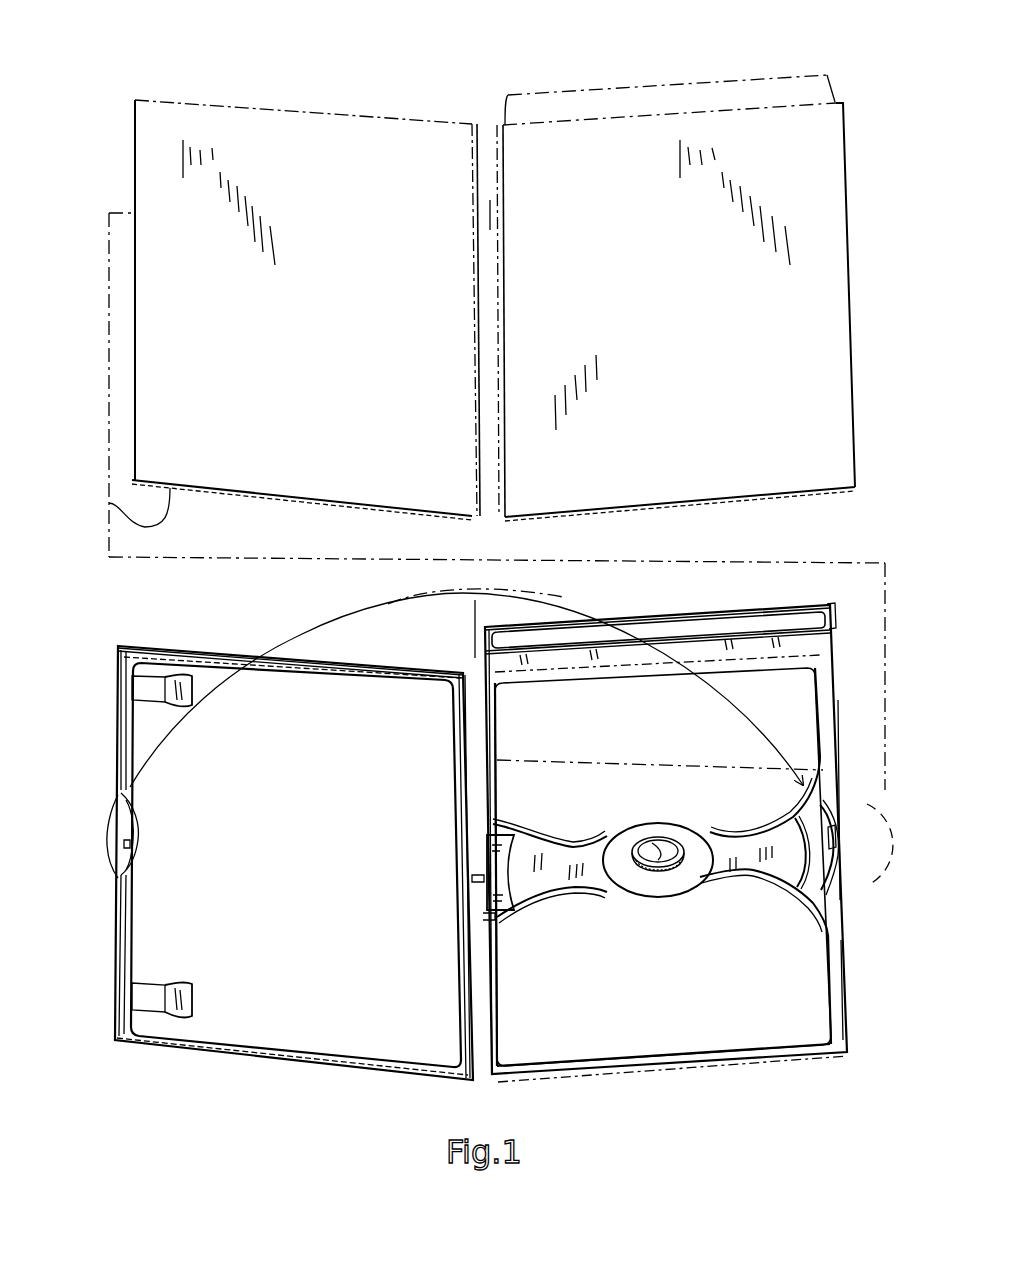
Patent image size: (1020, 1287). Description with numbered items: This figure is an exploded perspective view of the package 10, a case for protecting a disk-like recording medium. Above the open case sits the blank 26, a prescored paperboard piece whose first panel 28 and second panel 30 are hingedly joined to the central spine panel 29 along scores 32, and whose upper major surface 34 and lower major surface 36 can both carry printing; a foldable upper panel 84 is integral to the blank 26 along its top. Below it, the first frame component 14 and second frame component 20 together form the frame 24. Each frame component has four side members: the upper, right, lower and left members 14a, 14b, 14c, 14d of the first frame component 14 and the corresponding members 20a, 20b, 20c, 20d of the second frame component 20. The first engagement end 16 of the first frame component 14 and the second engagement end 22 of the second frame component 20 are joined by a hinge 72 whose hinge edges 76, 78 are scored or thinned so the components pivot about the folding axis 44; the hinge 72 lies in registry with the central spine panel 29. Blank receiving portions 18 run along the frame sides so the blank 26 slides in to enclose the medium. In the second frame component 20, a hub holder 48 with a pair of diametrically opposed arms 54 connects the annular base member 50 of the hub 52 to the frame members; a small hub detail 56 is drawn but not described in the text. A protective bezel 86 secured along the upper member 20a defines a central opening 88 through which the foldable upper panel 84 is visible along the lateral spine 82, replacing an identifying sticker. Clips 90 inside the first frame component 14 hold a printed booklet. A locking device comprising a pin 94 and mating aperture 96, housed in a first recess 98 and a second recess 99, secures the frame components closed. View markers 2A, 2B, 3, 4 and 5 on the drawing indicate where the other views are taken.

The package 10 is at (134, 92).
The first frame component 14 is at (180, 650).
The upper side member of first frame component 14a is at (252, 670).
The right side member of first frame component 14b is at (450, 1090).
The lower side member of first frame component 14c is at (222, 1055).
The left side member of first frame component 14d is at (138, 765).
The first engagement end 16 is at (452, 716).
The blank receiving portion 18 is at (637, 665).
The second frame component 20 is at (850, 663).
The upper side member of second frame component 20a is at (700, 680).
The right side member of second frame component 20b is at (828, 718).
The lower side member of second frame component 20c is at (765, 1050).
The left side member of second frame component 20d is at (500, 1013).
The second engagement end 22 is at (495, 742).
The frame 24 is at (390, 659).
The blank 26 is at (376, 128).
The first panel 28 is at (345, 355).
The central spine panel 29 is at (490, 212).
The second panel 30 is at (700, 347).
The scores 32 is at (470, 283).
The upper major surface 34 is at (213, 310).
The lower major surface 36 is at (109, 505).
The folding axis 44 is at (474, 613).
The hub holder 48 is at (590, 842).
The base member 50 is at (645, 880).
The hub 52 is at (700, 846).
The arms 54 is at (558, 880).
The hub release button 56 is at (655, 850).
The hinge 72 is at (470, 800).
The hinge edge 76 is at (482, 838).
The hinge edge 78 is at (557, 873).
The lateral spine 82 is at (607, 625).
The foldable upper panel 84 is at (688, 90).
The protective bezel 86 is at (735, 605).
The central opening 88 is at (790, 616).
The clips 90 is at (135, 690).
The pin 94 is at (838, 842).
The mating aperture 96 is at (125, 862).
The first recess 98 is at (118, 798).
The second recess 99 is at (840, 822).
The section line 2A is at (263, 652).
The section line 2B is at (655, 642).
The detail view 3 is at (862, 906).
The section line 4 is at (475, 952).
The section line 5 is at (655, 832).